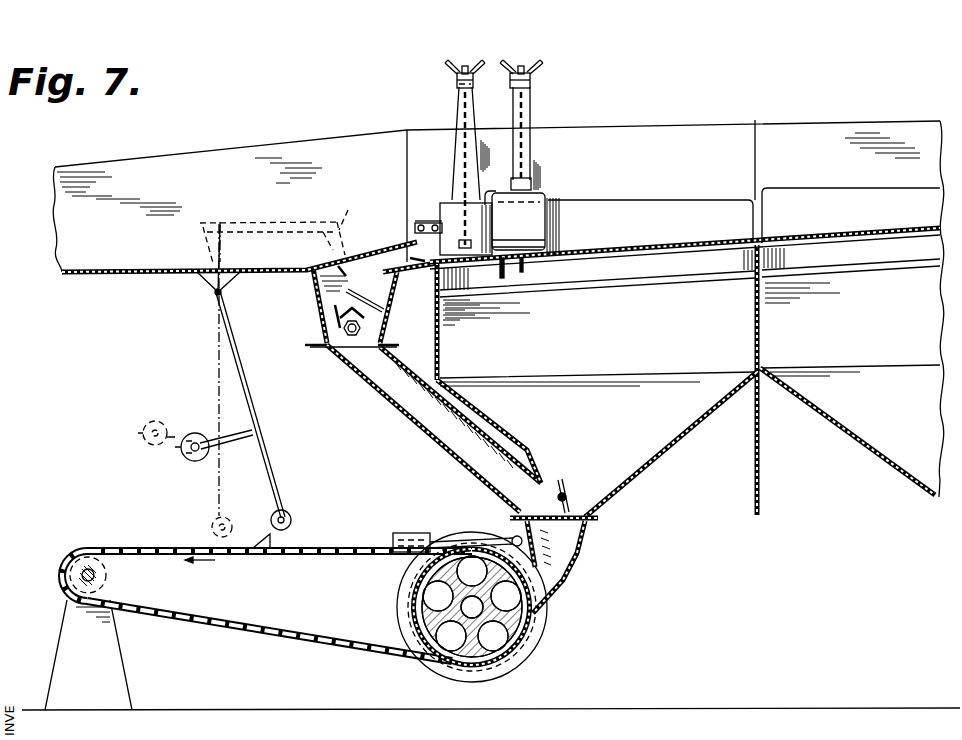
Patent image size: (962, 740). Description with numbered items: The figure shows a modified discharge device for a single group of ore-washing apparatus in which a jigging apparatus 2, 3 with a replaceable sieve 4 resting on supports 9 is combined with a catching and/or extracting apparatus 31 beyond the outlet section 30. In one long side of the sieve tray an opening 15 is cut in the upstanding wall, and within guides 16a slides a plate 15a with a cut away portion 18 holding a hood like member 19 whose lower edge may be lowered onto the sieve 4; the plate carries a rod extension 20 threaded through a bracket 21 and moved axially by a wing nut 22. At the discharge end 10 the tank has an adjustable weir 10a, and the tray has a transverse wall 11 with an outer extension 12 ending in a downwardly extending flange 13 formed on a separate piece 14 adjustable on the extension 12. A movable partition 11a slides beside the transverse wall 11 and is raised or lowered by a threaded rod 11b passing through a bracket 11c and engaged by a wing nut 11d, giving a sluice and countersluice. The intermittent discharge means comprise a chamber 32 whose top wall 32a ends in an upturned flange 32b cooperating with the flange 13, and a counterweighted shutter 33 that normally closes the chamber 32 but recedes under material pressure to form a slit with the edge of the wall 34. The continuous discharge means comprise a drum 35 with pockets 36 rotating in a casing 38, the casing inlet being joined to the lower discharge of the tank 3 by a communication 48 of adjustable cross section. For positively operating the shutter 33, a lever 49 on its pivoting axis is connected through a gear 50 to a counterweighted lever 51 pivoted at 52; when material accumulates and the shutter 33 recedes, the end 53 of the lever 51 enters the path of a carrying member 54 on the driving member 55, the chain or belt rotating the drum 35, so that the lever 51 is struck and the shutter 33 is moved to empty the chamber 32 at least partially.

The jigging apparatus 2 is at (822, 417).
The jigging apparatus 3 is at (436, 358).
The sieve 4 is at (633, 252).
The supports 9 is at (553, 294).
The discharge end 10 is at (433, 271).
The adjustable weir 10a is at (442, 318).
The transverse wall 11 is at (462, 212).
The movable partition 11a is at (470, 235).
The threaded rod 11b is at (460, 122).
The bracket 11c is at (458, 87).
The wing nut 11d is at (458, 74).
The extension 12 is at (458, 230).
The downwardly extending flange 13 is at (418, 233).
The separate piece 14 is at (432, 226).
The opening 15 is at (516, 262).
The plate 15a is at (541, 203).
The guides 16a is at (497, 195).
The cut away portion 18 is at (533, 233).
The hood like member 19 is at (535, 241).
The rod extension 20 is at (528, 157).
The bracket 21 is at (531, 112).
The wing nut 22 is at (531, 70).
The outlet section 30 is at (281, 152).
The catching and/or extracting apparatus 31 is at (308, 302).
The chamber 32 is at (302, 334).
The top wall 32a is at (377, 264).
The upturned flange 32b is at (422, 254).
The shutter 33 is at (312, 284).
The wall 34 is at (385, 306).
The drum 35 is at (470, 657).
The pockets 36 is at (520, 643).
The casing 38 is at (548, 600).
The communication 48 is at (572, 498).
The lever 49 is at (350, 211).
The gear 50 is at (268, 237).
The lever 51 is at (246, 368).
The pivot 52 is at (214, 295).
The end of lever 53 is at (285, 512).
The carrying member 54 is at (272, 541).
The driving member 55 is at (288, 637).